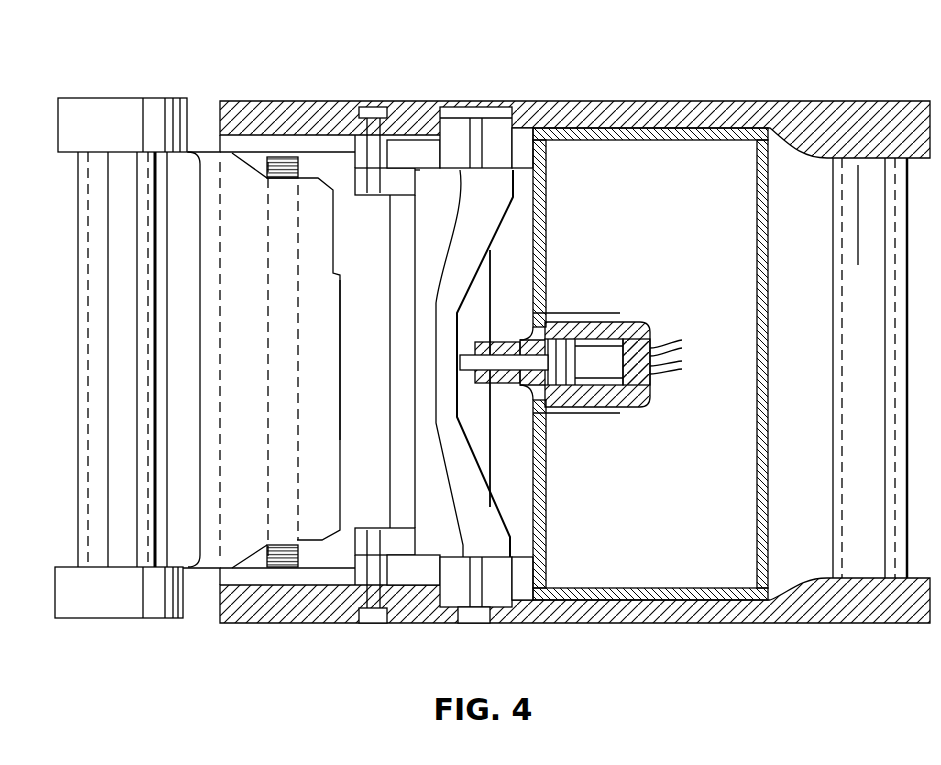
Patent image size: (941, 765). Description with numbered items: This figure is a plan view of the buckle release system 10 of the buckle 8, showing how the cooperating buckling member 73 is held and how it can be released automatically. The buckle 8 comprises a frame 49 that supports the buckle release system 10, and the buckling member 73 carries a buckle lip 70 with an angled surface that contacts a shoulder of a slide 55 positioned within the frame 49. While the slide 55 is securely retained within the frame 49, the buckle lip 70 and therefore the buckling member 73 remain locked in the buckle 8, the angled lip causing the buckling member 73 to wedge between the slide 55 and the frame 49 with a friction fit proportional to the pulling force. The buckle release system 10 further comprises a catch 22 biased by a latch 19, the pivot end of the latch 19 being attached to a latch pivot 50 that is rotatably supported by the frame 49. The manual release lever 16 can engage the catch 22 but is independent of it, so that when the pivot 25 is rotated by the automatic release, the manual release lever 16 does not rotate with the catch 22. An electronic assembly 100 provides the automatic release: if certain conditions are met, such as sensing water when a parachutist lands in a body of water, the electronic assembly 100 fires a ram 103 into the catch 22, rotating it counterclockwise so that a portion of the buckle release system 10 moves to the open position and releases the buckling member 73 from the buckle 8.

The buckle 8 is at (572, 26).
The buckle release system 10 is at (455, 96).
The manual release lever 16 is at (403, 473).
The latch 19 is at (524, 110).
The catch 22 is at (395, 160).
The pivot 25 is at (375, 103).
The frame 49 is at (243, 118).
The latch pivot 50 is at (486, 105).
The slide 55 is at (355, 472).
The buckle lip 70 is at (315, 195).
The cooperating buckling member 73 is at (98, 608).
The electronic assembly 100 is at (620, 322).
The ram 103 is at (530, 363).